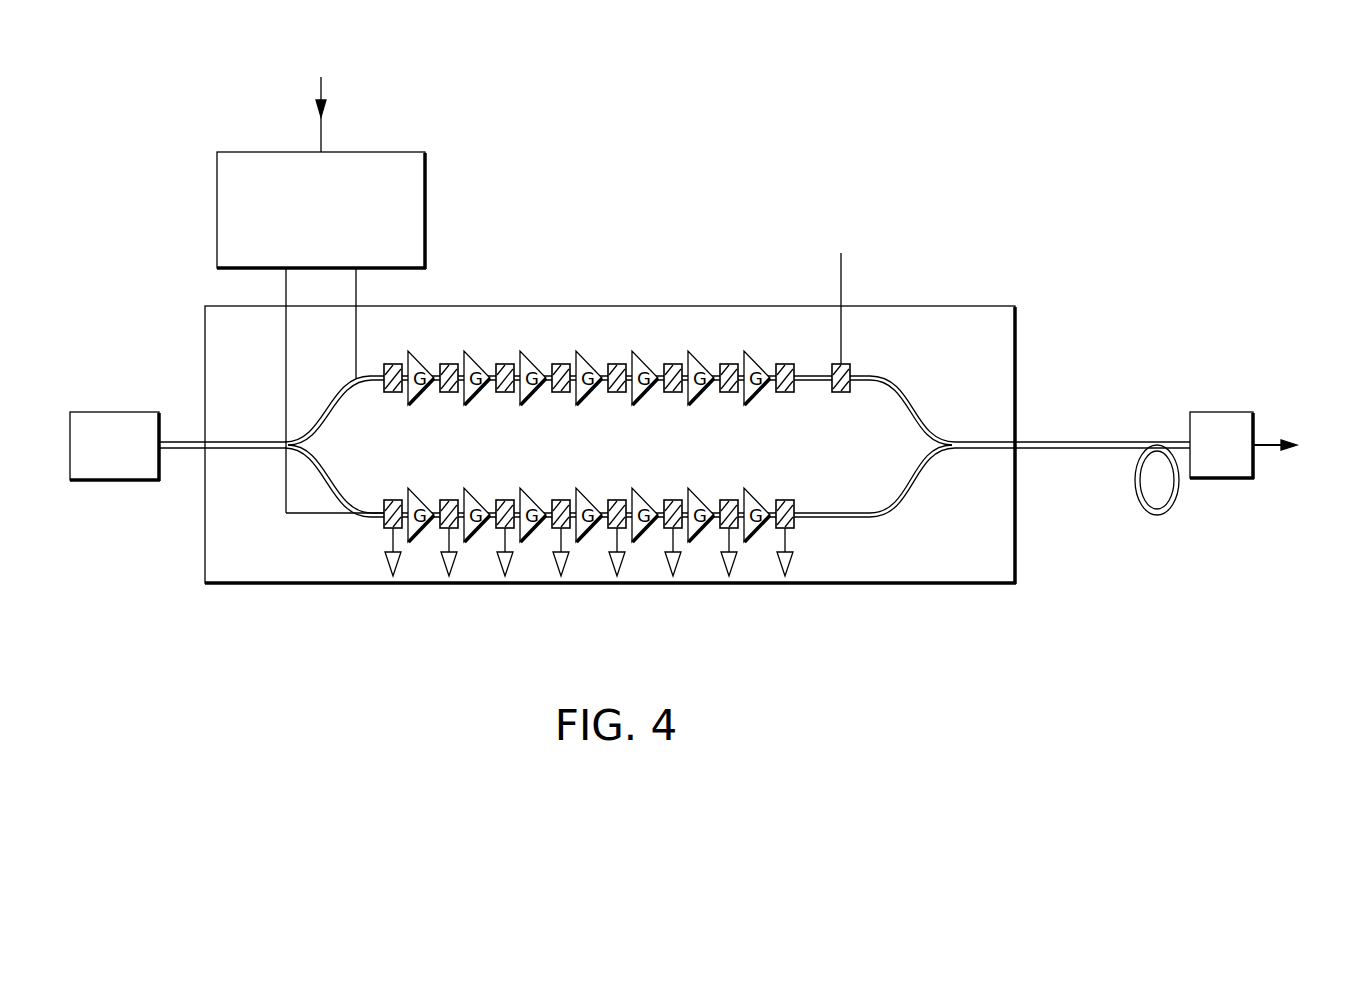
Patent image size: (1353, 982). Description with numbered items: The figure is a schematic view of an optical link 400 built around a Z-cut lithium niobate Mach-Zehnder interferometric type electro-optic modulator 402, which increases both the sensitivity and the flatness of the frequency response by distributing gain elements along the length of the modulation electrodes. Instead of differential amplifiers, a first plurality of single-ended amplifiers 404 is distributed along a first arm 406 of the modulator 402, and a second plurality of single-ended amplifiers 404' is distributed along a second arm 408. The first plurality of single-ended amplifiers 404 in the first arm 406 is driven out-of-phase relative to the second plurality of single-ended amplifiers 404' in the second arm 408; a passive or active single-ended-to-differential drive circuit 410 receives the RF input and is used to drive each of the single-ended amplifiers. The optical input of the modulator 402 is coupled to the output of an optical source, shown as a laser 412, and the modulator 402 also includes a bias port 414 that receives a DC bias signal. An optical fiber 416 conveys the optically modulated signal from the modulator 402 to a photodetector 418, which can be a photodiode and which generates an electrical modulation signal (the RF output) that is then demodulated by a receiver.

The optical link 400 is at (624, 223).
The electro-optic modulator 402 is at (618, 344).
The first plurality of single-ended amplifiers 404 is at (589, 470).
The second plurality of single-ended amplifiers 404' is at (589, 446).
The first arm 406 is at (334, 400).
The second arm 408 is at (313, 477).
The single-ended-to-differential drive circuit 410 is at (426, 212).
The laser 412 is at (97, 470).
The bias port 414 is at (866, 272).
The optical fiber 416 is at (1157, 515).
The photodetector 418 is at (1240, 470).